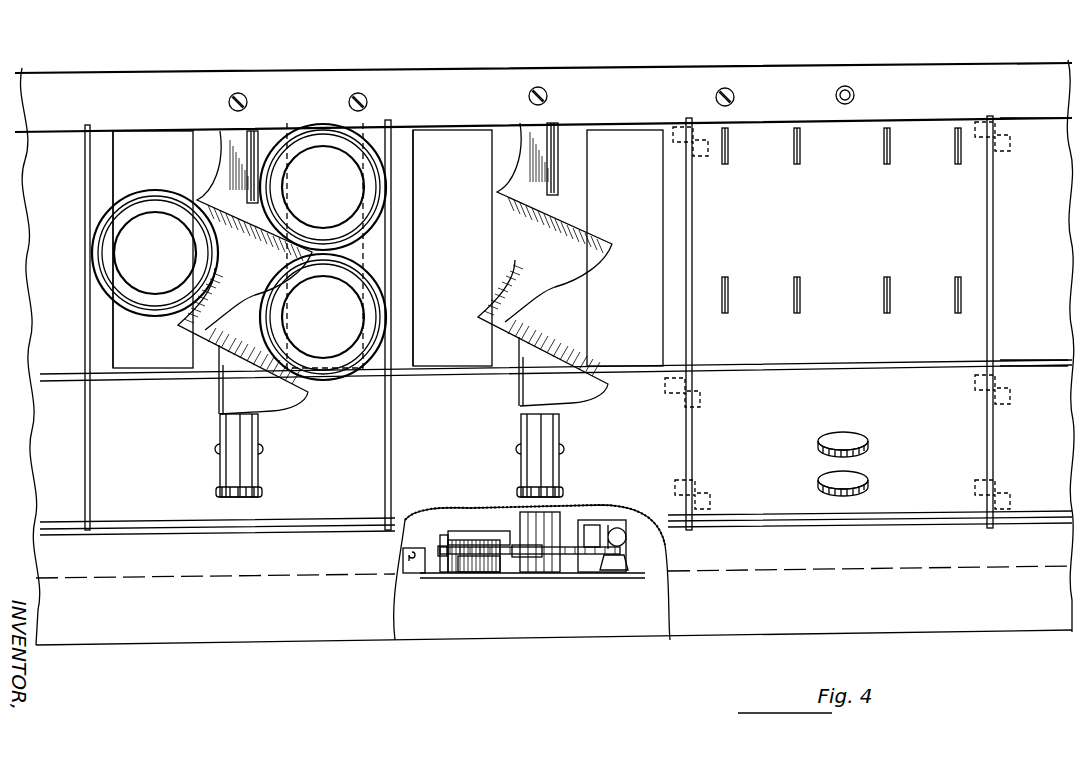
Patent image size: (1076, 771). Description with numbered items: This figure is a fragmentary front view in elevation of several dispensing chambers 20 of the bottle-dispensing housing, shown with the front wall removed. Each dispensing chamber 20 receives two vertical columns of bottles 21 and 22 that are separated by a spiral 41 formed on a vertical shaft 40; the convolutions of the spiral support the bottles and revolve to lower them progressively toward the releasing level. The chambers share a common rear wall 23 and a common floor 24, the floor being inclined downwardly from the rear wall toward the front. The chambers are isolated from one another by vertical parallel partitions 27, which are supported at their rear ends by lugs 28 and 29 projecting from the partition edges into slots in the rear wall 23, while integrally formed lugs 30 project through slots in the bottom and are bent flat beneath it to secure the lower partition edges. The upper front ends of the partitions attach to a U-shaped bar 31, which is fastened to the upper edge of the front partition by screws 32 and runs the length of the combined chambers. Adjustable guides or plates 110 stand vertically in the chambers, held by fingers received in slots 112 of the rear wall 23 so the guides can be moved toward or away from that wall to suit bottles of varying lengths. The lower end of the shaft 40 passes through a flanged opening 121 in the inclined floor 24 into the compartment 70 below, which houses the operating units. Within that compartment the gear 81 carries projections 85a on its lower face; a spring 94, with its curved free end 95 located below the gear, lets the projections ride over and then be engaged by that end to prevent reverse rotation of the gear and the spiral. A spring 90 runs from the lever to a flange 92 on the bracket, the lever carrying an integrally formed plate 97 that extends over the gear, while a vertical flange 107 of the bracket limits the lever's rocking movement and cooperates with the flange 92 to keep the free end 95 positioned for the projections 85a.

The dispensing chamber 20 is at (108, 183).
The bottle 21 is at (155, 253).
The bottle 22 is at (323, 252).
The rear wall 23 is at (1032, 140).
The floor 24 is at (556, 447).
The partition 27 is at (90, 478).
The lug 28 is at (985, 145).
The lug 29 is at (1000, 268).
The lug 30 is at (678, 398).
The U-shaped bar 31 is at (765, 88).
The screw 32 is at (362, 95).
The shaft 40 is at (245, 480).
The spiral 41 is at (218, 190).
The compartment 70 is at (640, 566).
The gear 81 is at (556, 556).
The projection 85a is at (512, 557).
The spring 90 is at (442, 548).
The flange 92 is at (410, 560).
The spring 94 is at (452, 568).
The free end 95 is at (532, 597).
The plate 97 is at (477, 531).
The vertical flange 107 is at (446, 535).
The guide 110 is at (388, 245).
The slot 112 is at (958, 160).
The flanged opening 121 is at (565, 476).